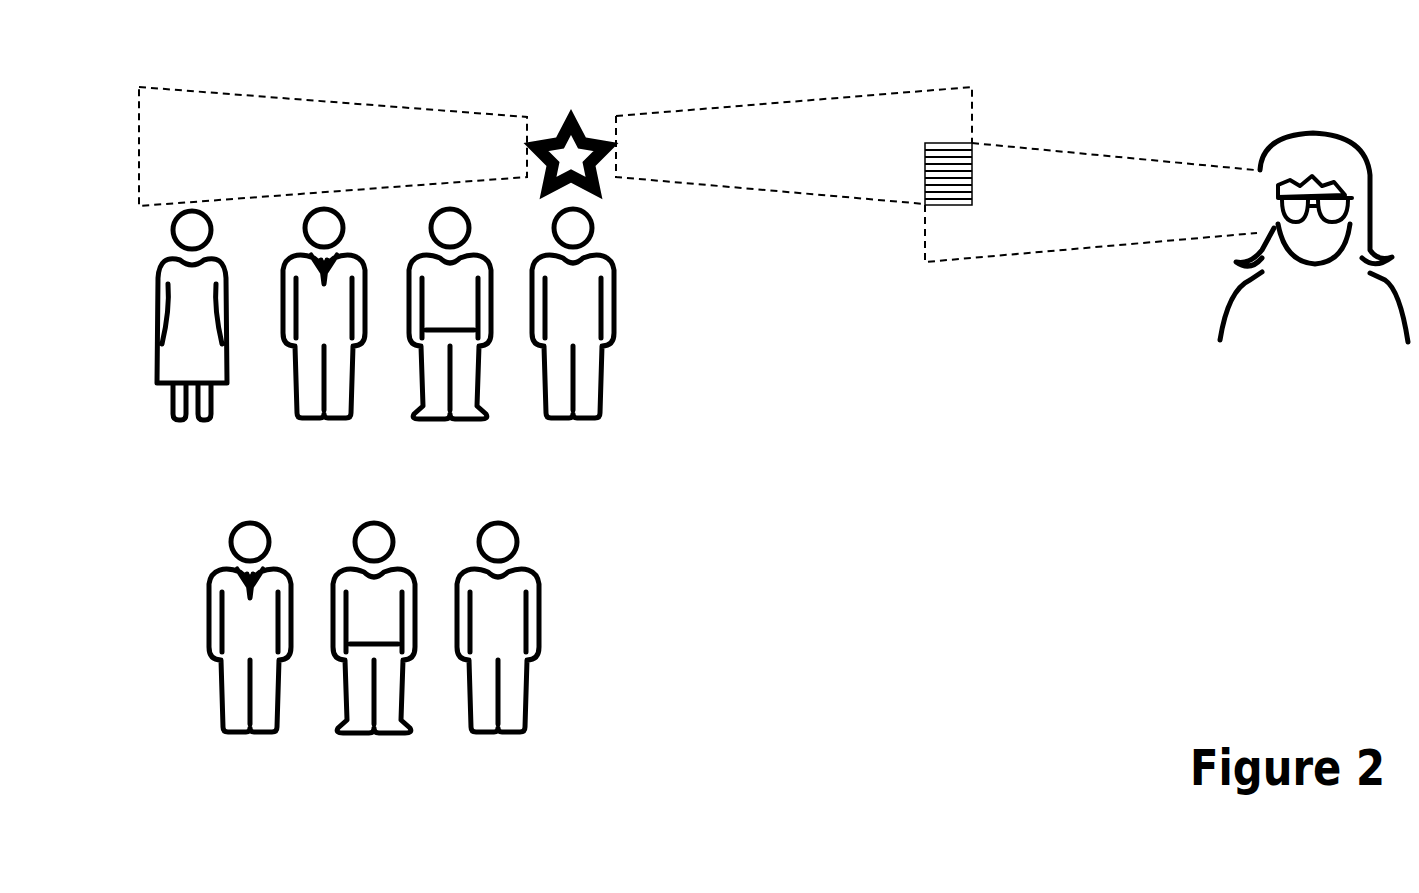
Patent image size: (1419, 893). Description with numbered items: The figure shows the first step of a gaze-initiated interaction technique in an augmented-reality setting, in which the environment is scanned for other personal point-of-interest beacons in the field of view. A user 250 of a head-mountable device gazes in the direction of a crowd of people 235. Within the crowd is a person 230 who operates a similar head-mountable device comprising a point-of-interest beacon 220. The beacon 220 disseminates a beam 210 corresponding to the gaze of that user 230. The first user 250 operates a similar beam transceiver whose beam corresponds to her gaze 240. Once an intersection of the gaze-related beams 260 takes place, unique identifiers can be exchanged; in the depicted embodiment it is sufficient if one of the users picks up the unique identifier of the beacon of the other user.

The beam 210 is at (352, 100).
The point-of-interest beacon 220 is at (572, 106).
The person 230 is at (636, 316).
The crowd of people 235 is at (466, 523).
The gaze 240 is at (1120, 154).
The user 250 is at (1330, 154).
The intersection of gaze-related beams 260 is at (920, 178).